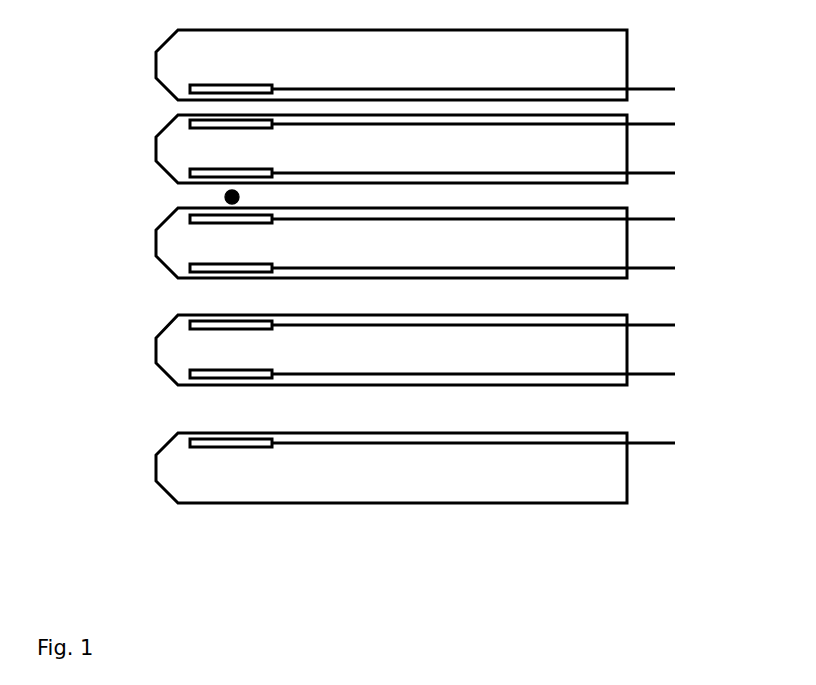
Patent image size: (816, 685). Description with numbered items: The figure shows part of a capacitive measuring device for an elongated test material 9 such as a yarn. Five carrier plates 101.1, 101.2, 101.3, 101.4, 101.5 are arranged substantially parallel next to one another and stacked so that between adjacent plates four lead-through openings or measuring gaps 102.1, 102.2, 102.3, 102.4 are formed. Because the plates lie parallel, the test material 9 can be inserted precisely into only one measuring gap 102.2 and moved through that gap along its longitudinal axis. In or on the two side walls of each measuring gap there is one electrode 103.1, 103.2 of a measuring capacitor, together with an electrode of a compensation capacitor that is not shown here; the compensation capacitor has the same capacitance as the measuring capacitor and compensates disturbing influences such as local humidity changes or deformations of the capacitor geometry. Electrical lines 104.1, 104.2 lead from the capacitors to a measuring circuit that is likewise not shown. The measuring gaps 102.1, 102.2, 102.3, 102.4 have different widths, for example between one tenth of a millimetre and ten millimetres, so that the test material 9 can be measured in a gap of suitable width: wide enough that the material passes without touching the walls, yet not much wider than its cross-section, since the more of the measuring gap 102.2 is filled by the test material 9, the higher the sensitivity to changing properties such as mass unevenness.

The test material 9 is at (232, 190).
The carrier plate 101.1 is at (541, 78).
The carrier plate 101.2 is at (541, 162).
The carrier plate 101.3 is at (541, 253).
The carrier plate 101.4 is at (541, 363).
The carrier plate 101.5 is at (541, 482).
The measuring gap 102.1 is at (156, 110).
The measuring gap 102.2 is at (156, 202).
The measuring gap 102.3 is at (156, 298).
The measuring gap 102.4 is at (156, 417).
The electrode of measuring capacitor 103.1 is at (258, 172).
The electrode of measuring capacitor 103.2 is at (257, 221).
The electrical line 104.1 is at (660, 172).
The electrical line 104.2 is at (660, 221).